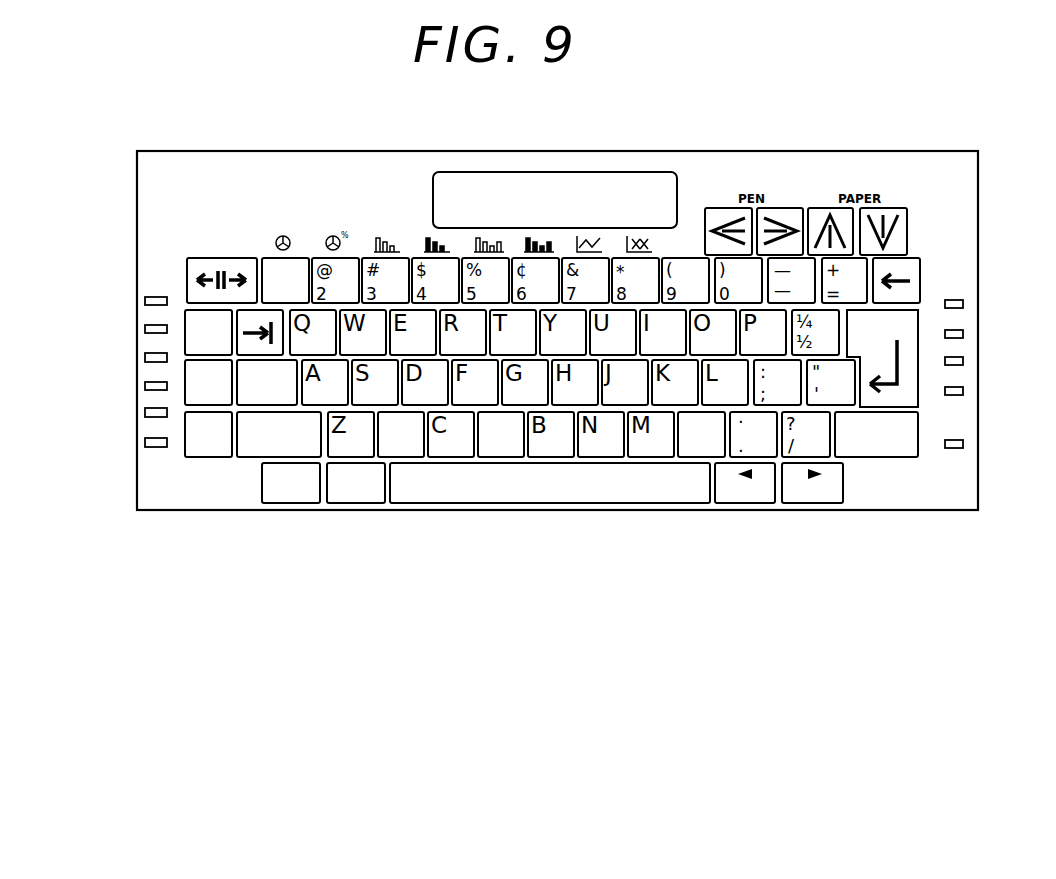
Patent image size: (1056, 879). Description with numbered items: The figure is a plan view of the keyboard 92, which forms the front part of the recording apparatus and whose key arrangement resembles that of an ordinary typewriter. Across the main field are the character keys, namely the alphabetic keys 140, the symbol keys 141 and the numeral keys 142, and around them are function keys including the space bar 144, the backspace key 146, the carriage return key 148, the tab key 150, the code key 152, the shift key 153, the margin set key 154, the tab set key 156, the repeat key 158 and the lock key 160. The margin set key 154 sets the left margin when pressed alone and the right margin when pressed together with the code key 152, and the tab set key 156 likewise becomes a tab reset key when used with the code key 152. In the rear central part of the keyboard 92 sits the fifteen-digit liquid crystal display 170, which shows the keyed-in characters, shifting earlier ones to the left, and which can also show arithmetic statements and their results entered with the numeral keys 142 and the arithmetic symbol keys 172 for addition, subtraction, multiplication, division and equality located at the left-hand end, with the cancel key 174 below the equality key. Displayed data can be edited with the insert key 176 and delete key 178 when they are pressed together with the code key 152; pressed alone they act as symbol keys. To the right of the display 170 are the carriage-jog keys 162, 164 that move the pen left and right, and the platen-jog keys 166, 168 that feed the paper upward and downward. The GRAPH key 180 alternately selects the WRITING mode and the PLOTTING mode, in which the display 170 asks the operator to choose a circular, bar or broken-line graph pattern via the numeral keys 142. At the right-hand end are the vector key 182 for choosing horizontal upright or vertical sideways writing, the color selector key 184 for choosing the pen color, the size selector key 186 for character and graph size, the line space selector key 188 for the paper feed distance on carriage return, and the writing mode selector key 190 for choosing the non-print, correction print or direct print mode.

The keyboard 92 is at (937, 495).
The alphabetic keys 140 is at (408, 452).
The symbol keys 141 is at (705, 452).
The numeral keys 142 is at (297, 264).
The space key 144 is at (562, 485).
The backspace key 146 is at (915, 268).
The carriage return key 148 is at (910, 398).
The tab key 150 is at (205, 262).
The code key 152 is at (195, 456).
The shift key 153 is at (257, 453).
The margin set key 154 is at (185, 322).
The tab set key 156 is at (185, 388).
The repeat key 158 is at (358, 500).
The lock key 160 is at (255, 398).
The carriage-jog key 162 is at (722, 210).
The carriage-jog key 164 is at (787, 210).
The platen-jog key 166 is at (825, 210).
The platen-jog key 168 is at (893, 210).
The liquid crystal display 170 is at (516, 175).
The arithmetic symbol keys 172 is at (145, 330).
The cancel key 174 is at (145, 443).
The insert key 176 is at (747, 500).
The delete key 178 is at (805, 500).
The GRAPH key 180 is at (300, 500).
The vector key 182 is at (963, 304).
The color selector key 184 is at (963, 334).
The size selector key 186 is at (963, 361).
The line space selector key 188 is at (963, 391).
The writing mode selector key 190 is at (963, 444).